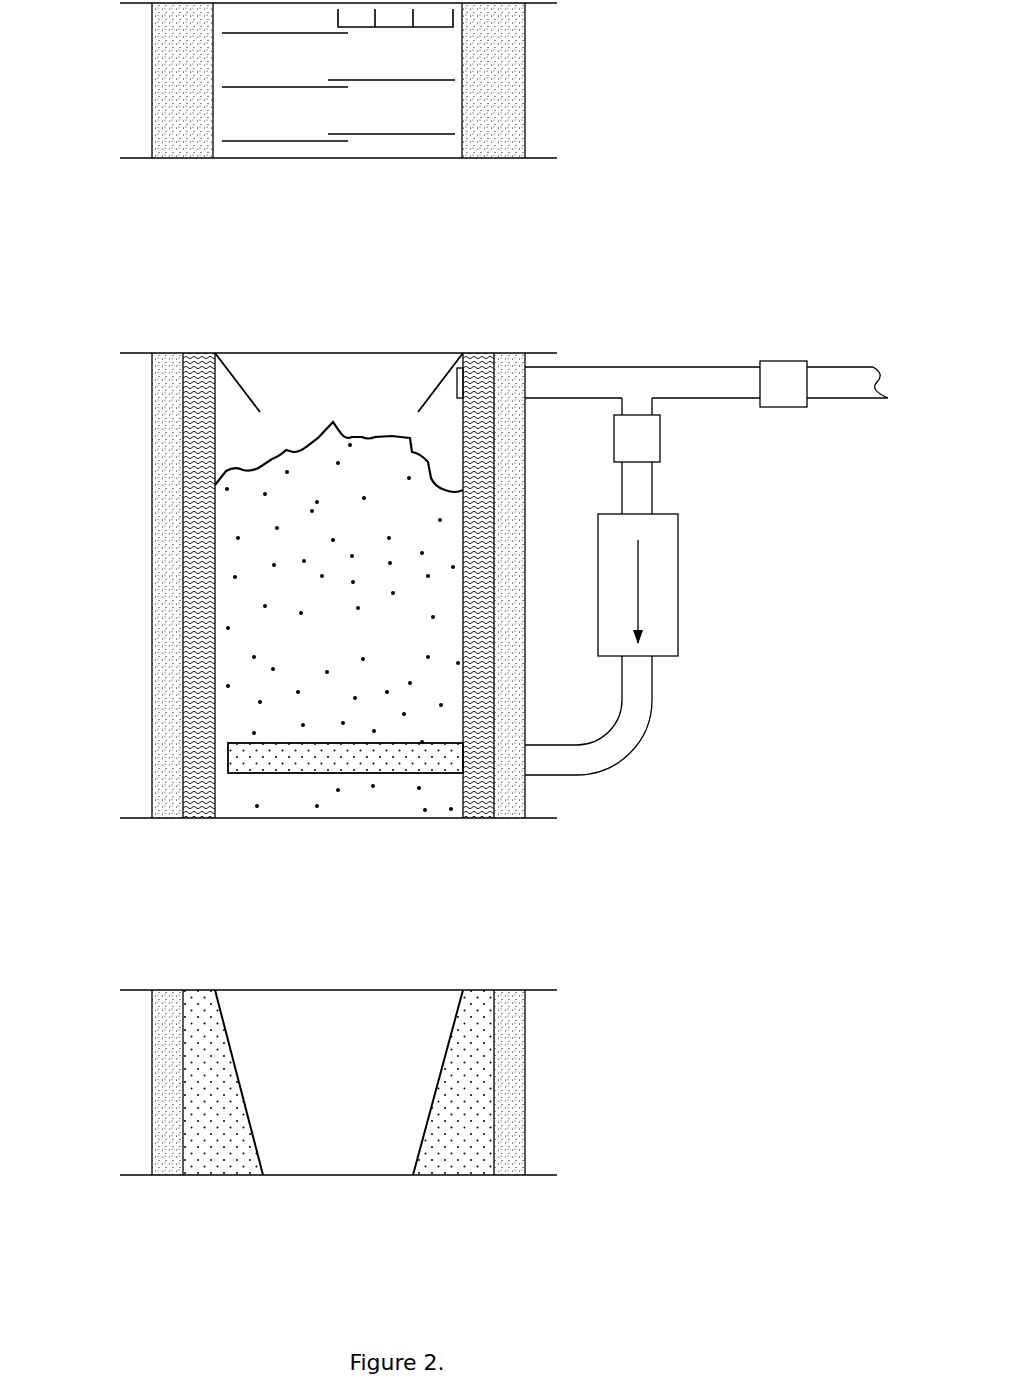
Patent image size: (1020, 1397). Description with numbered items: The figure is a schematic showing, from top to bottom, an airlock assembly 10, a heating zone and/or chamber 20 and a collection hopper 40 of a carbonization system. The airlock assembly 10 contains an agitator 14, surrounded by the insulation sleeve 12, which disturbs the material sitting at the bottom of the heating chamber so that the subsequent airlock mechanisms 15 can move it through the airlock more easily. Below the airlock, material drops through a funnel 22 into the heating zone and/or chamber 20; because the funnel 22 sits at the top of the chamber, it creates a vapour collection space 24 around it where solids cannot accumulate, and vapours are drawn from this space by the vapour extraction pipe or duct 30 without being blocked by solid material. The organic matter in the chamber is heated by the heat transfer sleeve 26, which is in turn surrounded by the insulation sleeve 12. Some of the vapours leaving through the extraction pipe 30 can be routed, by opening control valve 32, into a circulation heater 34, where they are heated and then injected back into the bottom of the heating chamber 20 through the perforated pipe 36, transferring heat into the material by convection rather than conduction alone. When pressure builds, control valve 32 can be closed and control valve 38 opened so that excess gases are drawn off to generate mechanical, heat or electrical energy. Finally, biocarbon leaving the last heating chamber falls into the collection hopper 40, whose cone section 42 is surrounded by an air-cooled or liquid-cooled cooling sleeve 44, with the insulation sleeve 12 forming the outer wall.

The airlock assembly 10 is at (299, 104).
The insulation sleeve 12 is at (497, 80).
The agitator 14 is at (333, 22).
The airlock mechanisms 15 is at (233, 87).
The heating zone and/or chamber 20 is at (461, 580).
The funnel 22 is at (237, 385).
The vapour collection space 24 is at (237, 410).
The heat transfer sleeve 26 is at (197, 511).
The vapour extraction pipe or duct 30 is at (610, 366).
The control valve 32 is at (662, 438).
The circulation heater 34 is at (680, 584).
The perforated pipe 36 is at (228, 757).
The control valve 38 is at (784, 409).
The collection hopper 40 is at (409, 1106).
The cone section 42 is at (455, 1037).
The cooling sleeve 44 is at (462, 1130).